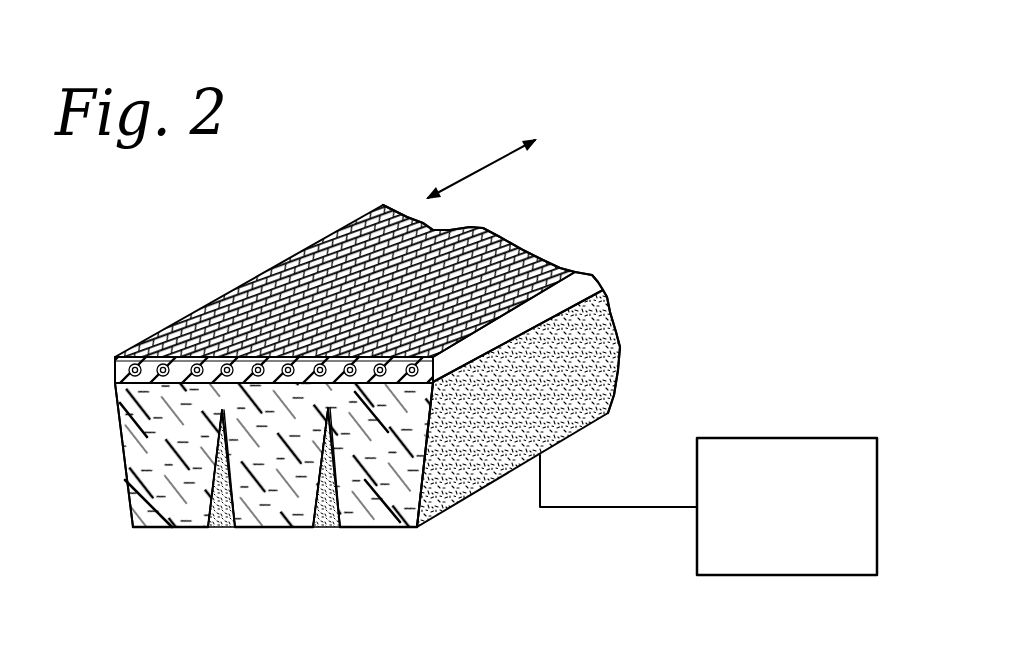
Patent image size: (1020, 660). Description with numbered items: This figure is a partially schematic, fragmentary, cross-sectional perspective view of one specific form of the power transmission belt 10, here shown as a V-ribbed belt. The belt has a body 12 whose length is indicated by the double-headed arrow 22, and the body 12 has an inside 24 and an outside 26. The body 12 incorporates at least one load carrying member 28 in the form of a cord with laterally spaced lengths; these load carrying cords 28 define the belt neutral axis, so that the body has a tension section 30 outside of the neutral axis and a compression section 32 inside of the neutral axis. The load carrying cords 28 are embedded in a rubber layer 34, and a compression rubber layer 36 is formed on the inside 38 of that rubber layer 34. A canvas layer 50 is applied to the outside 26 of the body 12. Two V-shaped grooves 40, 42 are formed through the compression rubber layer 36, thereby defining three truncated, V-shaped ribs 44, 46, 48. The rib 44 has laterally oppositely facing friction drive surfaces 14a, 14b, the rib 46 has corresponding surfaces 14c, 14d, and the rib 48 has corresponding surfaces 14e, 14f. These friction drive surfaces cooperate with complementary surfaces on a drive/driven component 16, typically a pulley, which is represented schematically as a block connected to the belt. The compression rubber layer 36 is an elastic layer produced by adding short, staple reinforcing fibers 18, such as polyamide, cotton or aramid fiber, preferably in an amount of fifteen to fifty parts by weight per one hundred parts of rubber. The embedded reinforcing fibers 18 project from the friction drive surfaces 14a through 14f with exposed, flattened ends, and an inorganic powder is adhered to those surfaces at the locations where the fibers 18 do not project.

The power transmission belt 10 is at (540, 221).
The body 12 is at (108, 400).
The friction drive surface 14a is at (448, 490).
The friction drive surface 14b is at (333, 530).
The friction drive surface 14c is at (322, 525).
The friction drive surface 14d is at (225, 530).
The friction drive surface 14e is at (215, 525).
The friction drive surface 14f is at (130, 500).
The drive/driven component 16 is at (773, 563).
The reinforcing fibers 18 is at (616, 358).
The double-headed arrow 22 is at (473, 173).
The inside 24 is at (392, 528).
The outside 26 is at (152, 364).
The load carrying member 28 is at (135, 366).
The tension section 30 is at (353, 370).
The compression section 32 is at (428, 395).
The rubber layer 34 is at (245, 383).
The compression rubber layer 36 is at (180, 518).
The inside of the rubber layer 38 is at (170, 360).
The V-shaped groove 40 is at (323, 450).
The V-shaped groove 42 is at (222, 450).
The V-shaped rib 44 is at (405, 461).
The V-shaped rib 46 is at (290, 480).
The V-shaped rib 48 is at (179, 461).
The canvas layer 50 is at (481, 229).